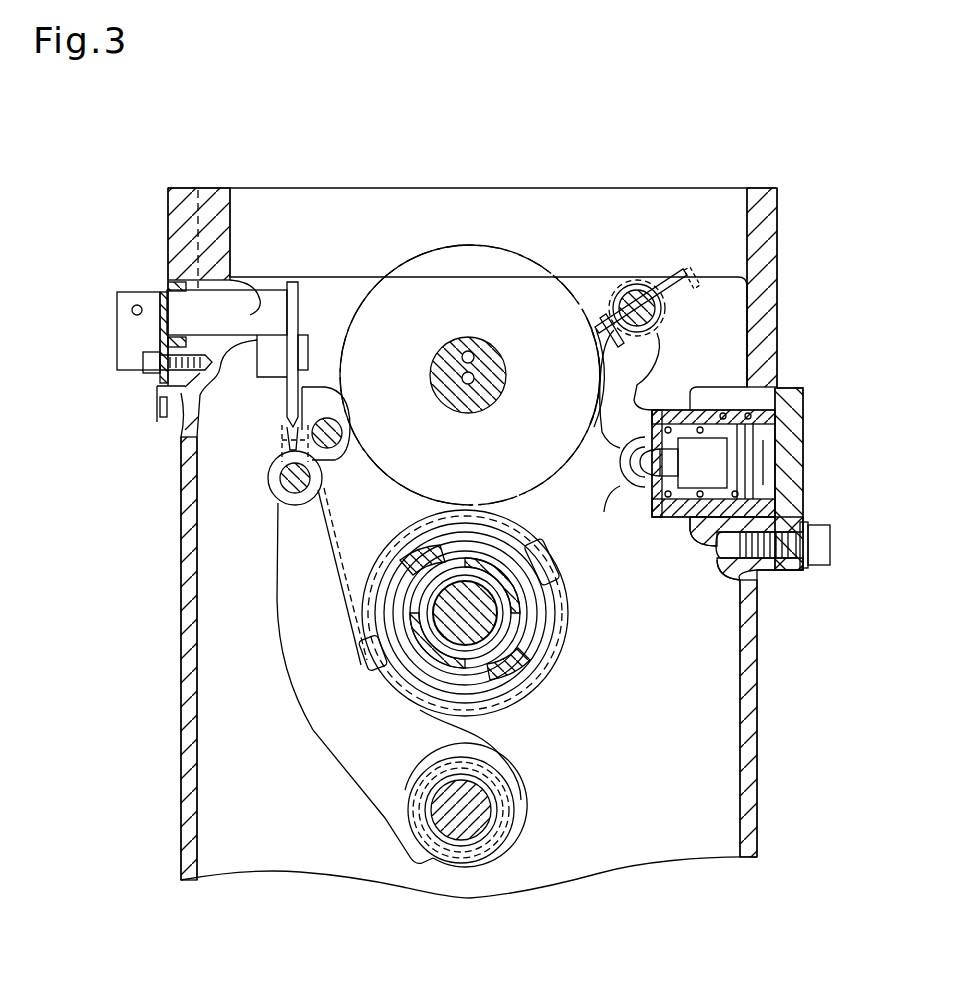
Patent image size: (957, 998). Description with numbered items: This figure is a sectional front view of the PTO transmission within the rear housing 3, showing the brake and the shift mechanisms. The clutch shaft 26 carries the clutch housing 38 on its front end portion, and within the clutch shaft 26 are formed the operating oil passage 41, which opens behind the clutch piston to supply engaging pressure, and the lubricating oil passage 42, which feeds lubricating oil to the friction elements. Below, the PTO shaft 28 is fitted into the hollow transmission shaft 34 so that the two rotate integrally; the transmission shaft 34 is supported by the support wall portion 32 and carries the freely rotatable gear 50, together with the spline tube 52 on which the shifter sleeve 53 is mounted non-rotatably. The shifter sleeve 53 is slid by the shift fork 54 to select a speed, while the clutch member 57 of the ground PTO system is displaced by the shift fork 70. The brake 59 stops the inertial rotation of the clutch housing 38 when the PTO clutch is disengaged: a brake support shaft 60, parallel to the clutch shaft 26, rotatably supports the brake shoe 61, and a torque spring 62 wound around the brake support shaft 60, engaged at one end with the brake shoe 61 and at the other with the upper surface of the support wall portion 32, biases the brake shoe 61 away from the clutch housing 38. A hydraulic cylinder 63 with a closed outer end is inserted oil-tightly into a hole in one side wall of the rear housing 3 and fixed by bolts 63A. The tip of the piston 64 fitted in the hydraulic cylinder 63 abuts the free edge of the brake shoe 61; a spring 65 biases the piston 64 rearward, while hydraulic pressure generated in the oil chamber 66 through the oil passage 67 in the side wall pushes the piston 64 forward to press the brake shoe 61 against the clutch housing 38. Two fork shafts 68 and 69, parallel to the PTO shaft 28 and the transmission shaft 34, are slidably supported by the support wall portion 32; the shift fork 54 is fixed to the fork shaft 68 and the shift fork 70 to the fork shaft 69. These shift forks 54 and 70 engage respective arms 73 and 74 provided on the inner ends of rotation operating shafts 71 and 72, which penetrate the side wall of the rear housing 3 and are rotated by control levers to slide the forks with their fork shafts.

The rear housing 3 is at (185, 532).
The clutch shaft 26 is at (490, 376).
The PTO shaft 28 is at (490, 632).
The support wall portion 32 is at (363, 286).
The transmission shaft 34 is at (522, 652).
The clutch housing 38 is at (514, 242).
The operating oil passage 41 is at (470, 356).
The lubricating oil passage 42 is at (470, 383).
The gear 50 is at (477, 818).
The spline tube 52 is at (502, 683).
The shifter sleeve 53 is at (555, 610).
The shift fork 54 is at (408, 510).
The clutch member 57 is at (498, 848).
The brake 59 is at (585, 301).
The brake support shaft 60 is at (635, 305).
The brake shoe 61 is at (625, 364).
The torque spring 62 is at (670, 288).
The hydraulic cylinder 63 is at (700, 510).
The bolts 63A is at (764, 556).
The piston 64 is at (735, 402).
The spring 65 is at (692, 462).
The oil chamber 66 is at (763, 432).
The oil passage 67 is at (752, 402).
The fork shaft 68 is at (338, 425).
The fork shaft 69 is at (287, 485).
The shift fork 70 is at (332, 708).
The rotation operating shaft 71 is at (233, 308).
The rotation operating shaft 72 is at (268, 365).
The arm 73 is at (295, 345).
The arm 74 is at (276, 446).